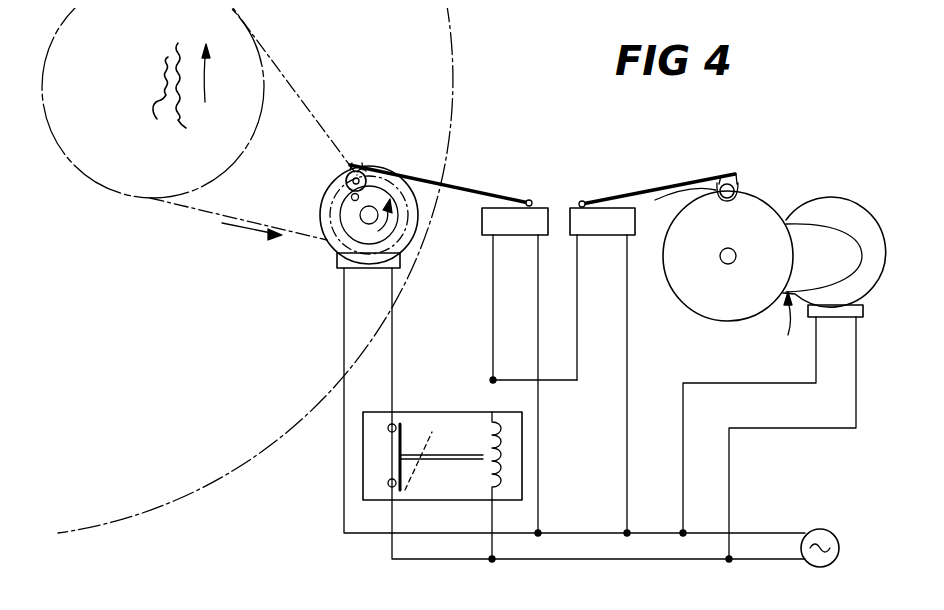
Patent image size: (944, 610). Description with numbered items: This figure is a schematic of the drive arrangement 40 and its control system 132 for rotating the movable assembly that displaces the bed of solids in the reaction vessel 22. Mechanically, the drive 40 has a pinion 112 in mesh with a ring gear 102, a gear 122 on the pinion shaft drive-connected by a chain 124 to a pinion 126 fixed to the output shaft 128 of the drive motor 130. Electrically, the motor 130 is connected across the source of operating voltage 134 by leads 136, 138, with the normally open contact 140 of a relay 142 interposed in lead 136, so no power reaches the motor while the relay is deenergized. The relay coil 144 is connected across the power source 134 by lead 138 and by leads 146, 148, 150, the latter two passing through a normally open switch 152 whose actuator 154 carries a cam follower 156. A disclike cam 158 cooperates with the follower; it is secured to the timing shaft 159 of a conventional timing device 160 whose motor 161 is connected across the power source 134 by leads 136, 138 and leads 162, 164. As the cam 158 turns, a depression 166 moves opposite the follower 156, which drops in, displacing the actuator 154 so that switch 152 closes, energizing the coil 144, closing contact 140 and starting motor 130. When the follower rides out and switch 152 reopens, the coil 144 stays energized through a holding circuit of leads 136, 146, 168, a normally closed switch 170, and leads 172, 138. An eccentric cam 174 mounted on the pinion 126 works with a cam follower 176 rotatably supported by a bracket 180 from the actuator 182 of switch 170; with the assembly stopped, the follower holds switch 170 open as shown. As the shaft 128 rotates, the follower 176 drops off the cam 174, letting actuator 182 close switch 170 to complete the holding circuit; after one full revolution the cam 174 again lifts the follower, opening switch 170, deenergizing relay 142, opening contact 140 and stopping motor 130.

The reaction vessel 22 is at (244, 472).
The drive arrangement 40 is at (404, 150).
The ring gear 102 is at (200, 93).
The pinion 112 is at (157, 118).
The gear 122 is at (108, 190).
The chain 124 is at (188, 210).
The pinion 126 is at (336, 196).
The output shaft 128 is at (360, 213).
The drive motor 130 is at (414, 240).
The control system 132 is at (652, 178).
The source of operating voltage 134 is at (805, 535).
The lead 136 is at (580, 560).
The lead 138 is at (616, 532).
The normally open contact 140 is at (398, 453).
The relay 142 is at (380, 412).
The relay coil 144 is at (506, 455).
The lead 146 is at (492, 520).
The lead 148 is at (494, 377).
The lead 150 is at (627, 303).
The normally open switch 152 is at (633, 238).
The actuator 154 is at (683, 176).
The cam follower 156 is at (740, 190).
The disclike cam 158 is at (728, 256).
The timing shaft 159 is at (731, 264).
The timing device 160 is at (790, 340).
The motor 161 is at (845, 200).
The lead 162 is at (683, 396).
The lead 164 is at (790, 430).
The depression 166 is at (700, 191).
The lead 168 is at (493, 302).
The normally closed switch 170 is at (482, 219).
The lead 172 is at (538, 264).
The eccentric cam 174 is at (350, 195).
The cam follower 176 is at (351, 173).
The bracket 180 is at (362, 168).
The actuator 182 is at (428, 182).